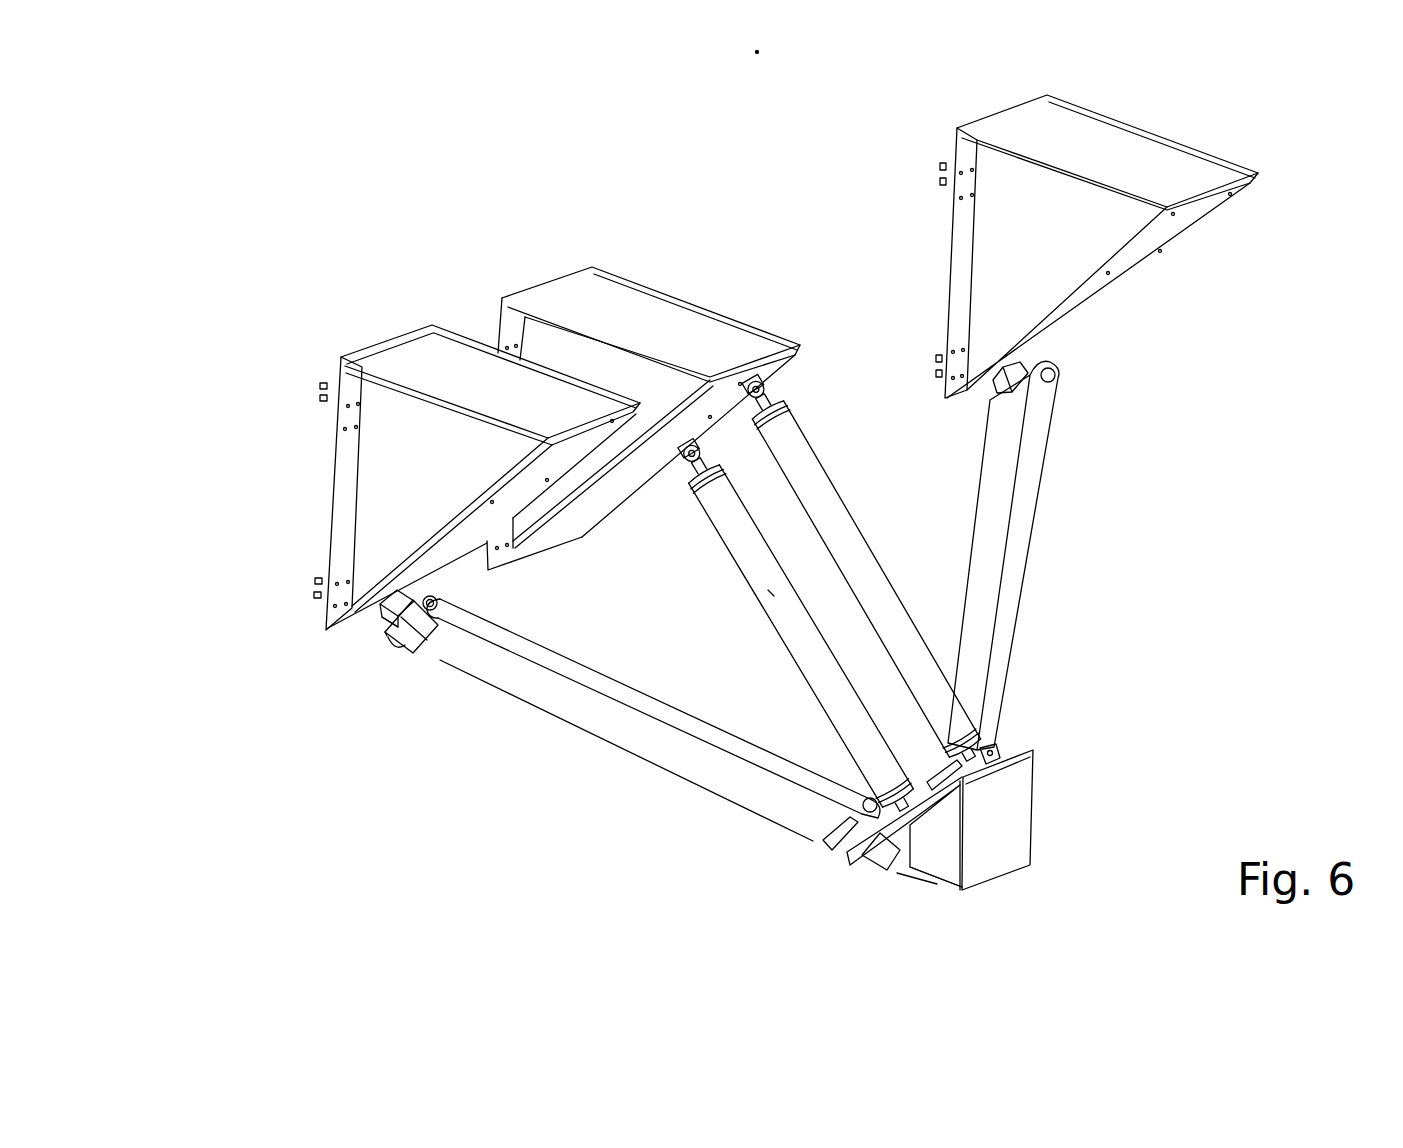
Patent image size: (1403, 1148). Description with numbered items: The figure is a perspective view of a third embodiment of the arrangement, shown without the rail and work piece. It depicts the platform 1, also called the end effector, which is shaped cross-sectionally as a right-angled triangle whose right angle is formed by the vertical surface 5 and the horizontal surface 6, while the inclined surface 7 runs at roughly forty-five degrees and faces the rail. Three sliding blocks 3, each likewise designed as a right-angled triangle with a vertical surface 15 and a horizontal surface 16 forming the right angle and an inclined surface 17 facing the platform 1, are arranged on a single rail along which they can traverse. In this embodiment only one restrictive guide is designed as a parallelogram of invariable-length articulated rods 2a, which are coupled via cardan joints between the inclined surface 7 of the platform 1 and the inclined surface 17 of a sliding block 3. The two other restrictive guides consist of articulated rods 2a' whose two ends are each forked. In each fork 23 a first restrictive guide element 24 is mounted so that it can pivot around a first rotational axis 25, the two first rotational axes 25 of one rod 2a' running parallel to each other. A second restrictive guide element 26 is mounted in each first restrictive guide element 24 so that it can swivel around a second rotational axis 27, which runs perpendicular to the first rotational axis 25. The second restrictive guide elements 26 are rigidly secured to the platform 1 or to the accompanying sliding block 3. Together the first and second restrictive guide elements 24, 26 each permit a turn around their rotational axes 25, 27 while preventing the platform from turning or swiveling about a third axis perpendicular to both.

The platform 1 is at (1040, 784).
The sliding block 3 is at (547, 278).
The vertical surface 5 is at (1010, 827).
The horizontal surface 6 is at (937, 883).
The inclined surface 7 is at (923, 797).
The vertical surface of sliding block 15 is at (336, 393).
The horizontal surface of sliding block 16 is at (450, 380).
The inclined surface of sliding block 17 is at (1133, 267).
The first articulated rod 2a is at (839, 592).
The articulated rod 2a' is at (797, 601).
The fork 23 is at (400, 640).
The first restrictive guide element 24 is at (387, 636).
The first rotational axis 25 is at (443, 603).
The second restrictive guide element 26 is at (385, 628).
The second rotational axis 27 is at (380, 608).